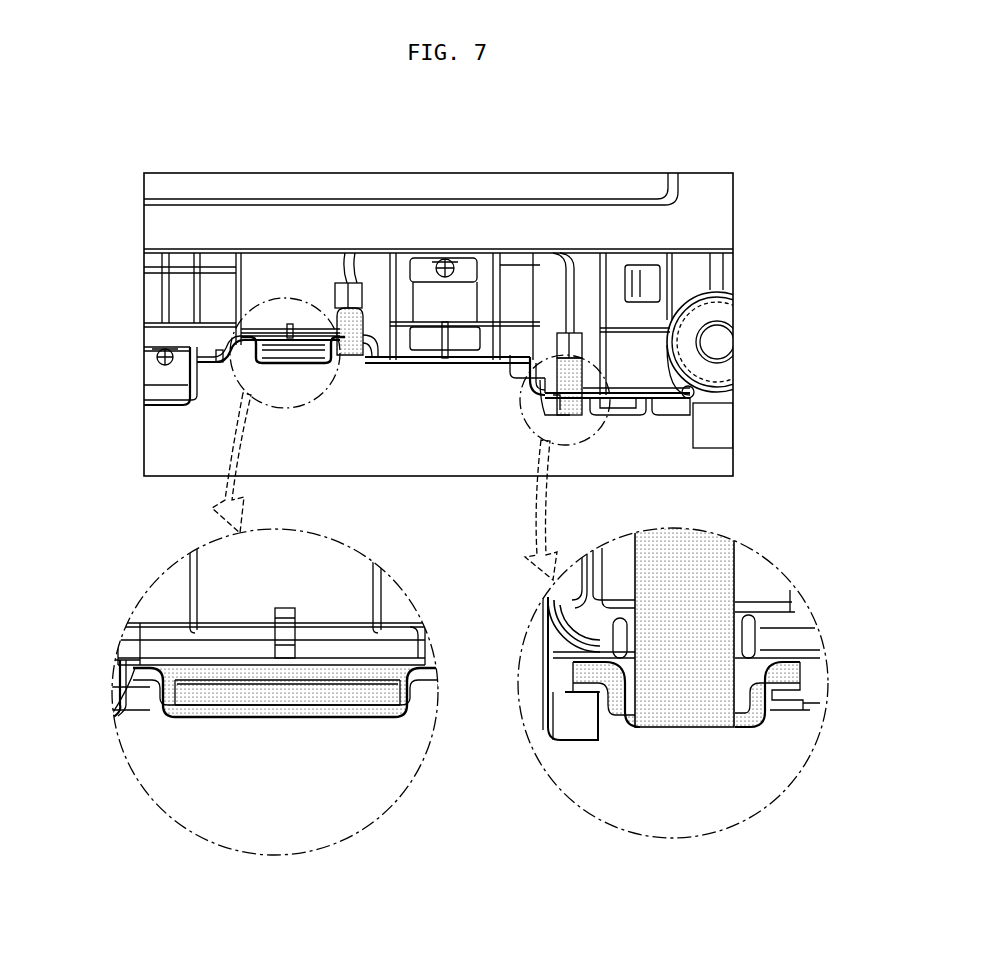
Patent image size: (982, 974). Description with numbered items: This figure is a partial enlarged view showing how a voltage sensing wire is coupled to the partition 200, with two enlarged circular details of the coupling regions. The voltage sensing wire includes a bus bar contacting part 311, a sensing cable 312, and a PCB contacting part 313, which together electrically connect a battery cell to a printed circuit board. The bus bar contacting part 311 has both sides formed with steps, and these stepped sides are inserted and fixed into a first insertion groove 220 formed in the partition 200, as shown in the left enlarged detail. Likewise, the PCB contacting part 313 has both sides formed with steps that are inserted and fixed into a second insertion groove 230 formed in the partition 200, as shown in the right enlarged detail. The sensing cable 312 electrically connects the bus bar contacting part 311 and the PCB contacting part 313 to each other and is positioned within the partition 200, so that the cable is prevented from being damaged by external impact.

The partition 200 is at (470, 199).
The bus bar contacting part 311 is at (256, 365).
The sensing cable 312 is at (350, 253).
The PCB contacting part 313 is at (583, 383).
The first insertion groove 220 is at (128, 680).
The second insertion groove 230 is at (575, 683).